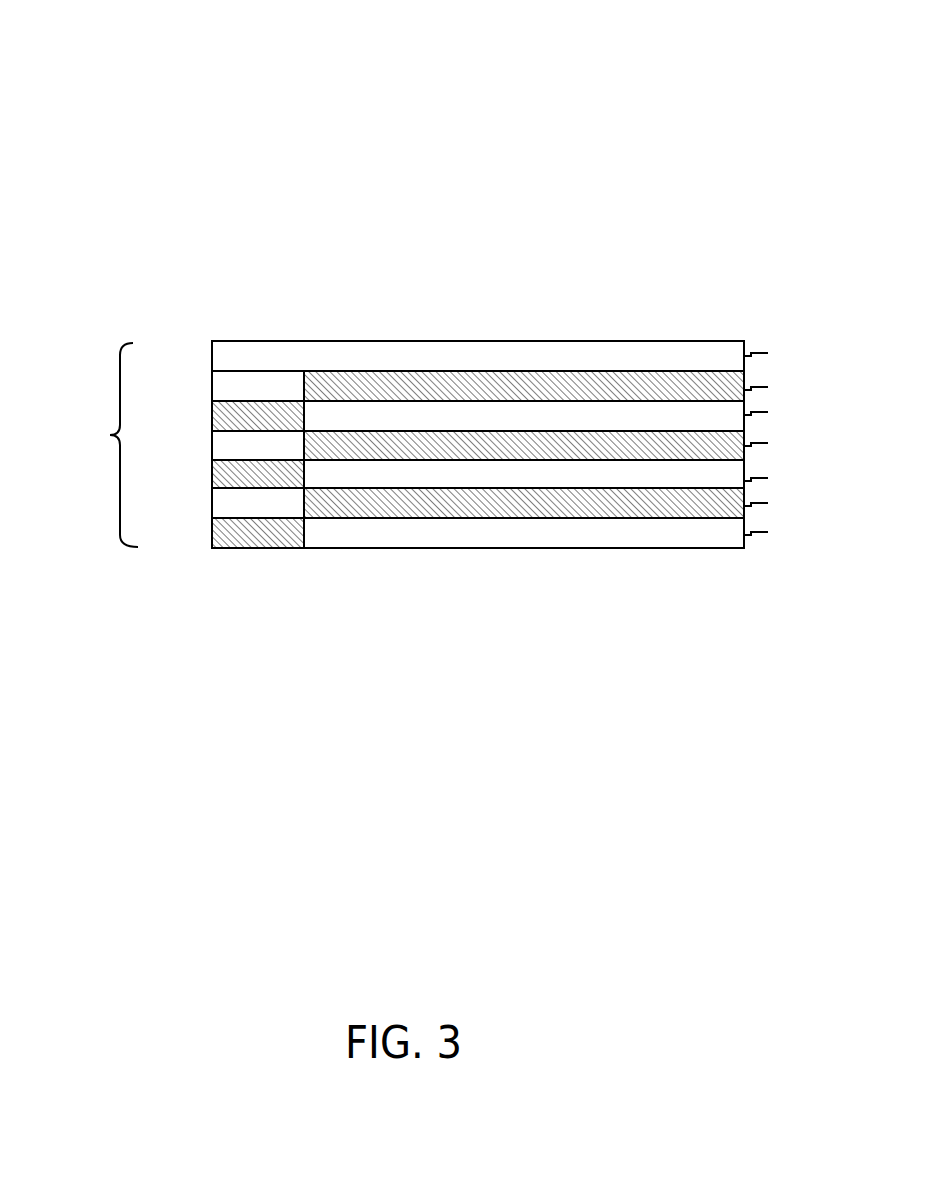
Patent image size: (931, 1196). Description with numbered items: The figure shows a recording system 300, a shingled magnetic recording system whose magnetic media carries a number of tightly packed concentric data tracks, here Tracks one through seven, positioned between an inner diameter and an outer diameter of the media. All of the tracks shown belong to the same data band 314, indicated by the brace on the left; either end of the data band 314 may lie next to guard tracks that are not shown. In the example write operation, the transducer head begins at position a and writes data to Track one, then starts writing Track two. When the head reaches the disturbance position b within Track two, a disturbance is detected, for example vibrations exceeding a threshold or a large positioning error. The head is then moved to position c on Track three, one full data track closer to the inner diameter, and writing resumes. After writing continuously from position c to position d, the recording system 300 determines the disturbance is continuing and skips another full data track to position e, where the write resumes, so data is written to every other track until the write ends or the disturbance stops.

The recording system 300 is at (142, 104).
The data band 314 is at (110, 435).
The position a is at (206, 326).
The disturbance position b is at (316, 379).
The position c is at (318, 413).
The position d is at (318, 447).
The position e is at (318, 475).